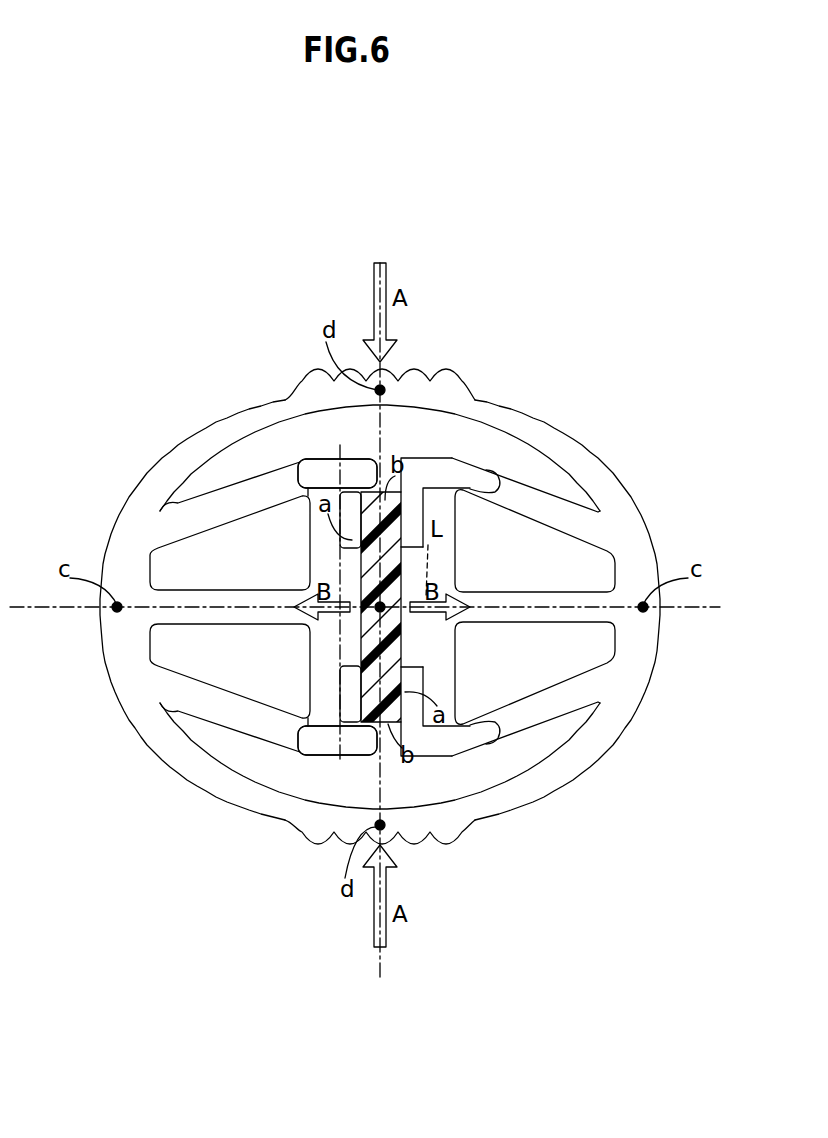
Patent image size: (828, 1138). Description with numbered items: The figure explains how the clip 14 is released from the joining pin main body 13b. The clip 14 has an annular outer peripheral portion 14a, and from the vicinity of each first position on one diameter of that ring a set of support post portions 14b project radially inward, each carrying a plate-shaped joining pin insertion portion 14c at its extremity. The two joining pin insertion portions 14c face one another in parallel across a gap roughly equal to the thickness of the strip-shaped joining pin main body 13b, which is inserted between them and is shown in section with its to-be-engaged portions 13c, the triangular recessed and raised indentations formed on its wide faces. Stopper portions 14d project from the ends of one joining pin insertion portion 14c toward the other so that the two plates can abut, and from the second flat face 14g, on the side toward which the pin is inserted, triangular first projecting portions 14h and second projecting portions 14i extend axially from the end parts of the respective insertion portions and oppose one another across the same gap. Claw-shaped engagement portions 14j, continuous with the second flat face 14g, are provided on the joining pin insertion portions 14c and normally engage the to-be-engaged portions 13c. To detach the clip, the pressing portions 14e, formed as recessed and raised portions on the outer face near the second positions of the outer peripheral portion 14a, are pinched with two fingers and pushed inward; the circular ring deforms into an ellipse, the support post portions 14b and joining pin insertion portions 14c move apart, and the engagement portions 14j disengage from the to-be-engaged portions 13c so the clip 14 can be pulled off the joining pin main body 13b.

The clip 14 is at (545, 423).
The outer peripheral portion 14a is at (197, 435).
The support post portions 14b is at (188, 692).
The joining pin insertion portion 14c is at (330, 563).
The stopper portions 14d is at (355, 458).
The pressing portions 14e is at (413, 370).
The second flat face 14g is at (548, 768).
The first projecting portions 14h is at (342, 480).
The second projecting portions 14i is at (442, 470).
The engagement portions 14j is at (347, 630).
The joining pin main body 13b is at (388, 492).
The to-be-engaged portions 13c is at (345, 685).